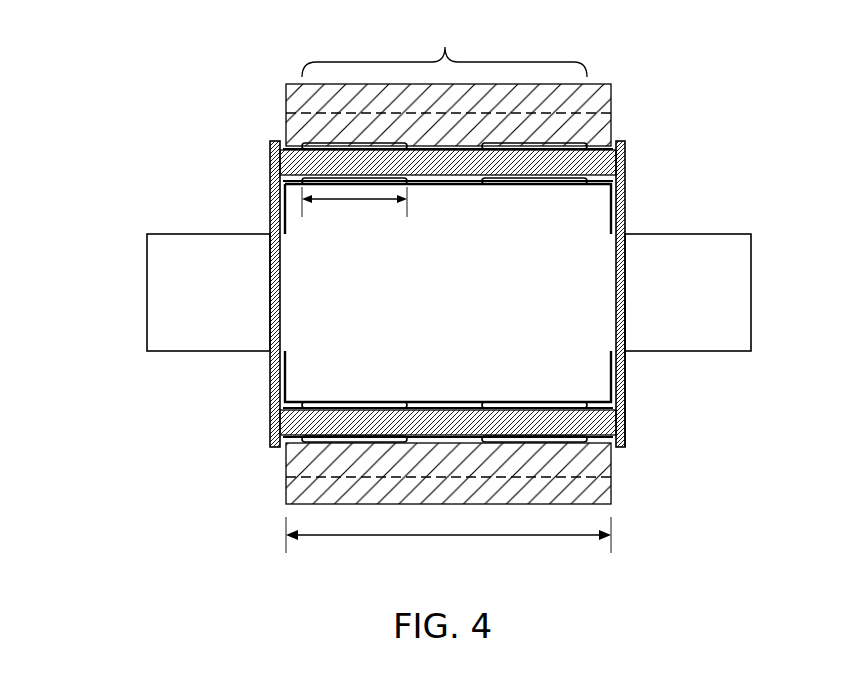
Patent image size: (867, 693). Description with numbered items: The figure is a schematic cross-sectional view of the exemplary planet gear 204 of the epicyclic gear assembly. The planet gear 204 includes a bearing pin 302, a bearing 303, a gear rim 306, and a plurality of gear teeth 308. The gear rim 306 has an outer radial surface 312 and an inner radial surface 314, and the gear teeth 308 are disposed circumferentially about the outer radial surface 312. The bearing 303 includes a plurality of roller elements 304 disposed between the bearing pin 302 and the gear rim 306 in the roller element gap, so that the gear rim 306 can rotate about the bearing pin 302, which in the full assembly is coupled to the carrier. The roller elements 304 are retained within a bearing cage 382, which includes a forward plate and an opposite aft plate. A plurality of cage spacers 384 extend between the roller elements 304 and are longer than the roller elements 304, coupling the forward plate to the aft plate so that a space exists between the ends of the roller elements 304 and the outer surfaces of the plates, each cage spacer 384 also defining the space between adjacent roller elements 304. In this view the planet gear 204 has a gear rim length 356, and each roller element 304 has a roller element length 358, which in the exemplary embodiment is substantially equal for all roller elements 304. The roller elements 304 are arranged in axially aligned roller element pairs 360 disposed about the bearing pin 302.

The planet gear 204 is at (148, 69).
The bearing pin 302 is at (330, 318).
The bearing 303 is at (268, 142).
The roller elements 304 is at (305, 146).
The gear rim 306 is at (545, 470).
The gear teeth 308 is at (612, 503).
The outer radial surface 312 is at (606, 82).
The inner radial surface 314 is at (627, 150).
The gear rim length 356 is at (445, 537).
The roller element length 358 is at (345, 200).
The roller element pairs 360 is at (444, 48).
The bearing cage 382 is at (627, 391).
The cage spacers 384 is at (298, 443).